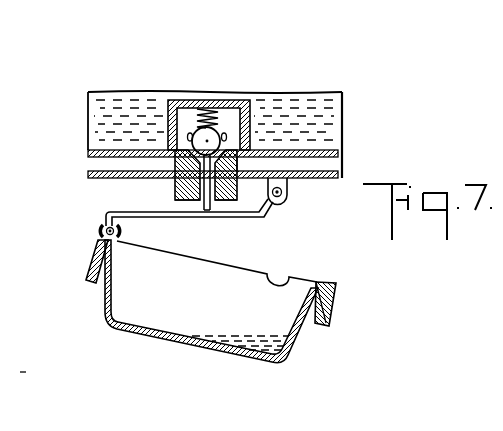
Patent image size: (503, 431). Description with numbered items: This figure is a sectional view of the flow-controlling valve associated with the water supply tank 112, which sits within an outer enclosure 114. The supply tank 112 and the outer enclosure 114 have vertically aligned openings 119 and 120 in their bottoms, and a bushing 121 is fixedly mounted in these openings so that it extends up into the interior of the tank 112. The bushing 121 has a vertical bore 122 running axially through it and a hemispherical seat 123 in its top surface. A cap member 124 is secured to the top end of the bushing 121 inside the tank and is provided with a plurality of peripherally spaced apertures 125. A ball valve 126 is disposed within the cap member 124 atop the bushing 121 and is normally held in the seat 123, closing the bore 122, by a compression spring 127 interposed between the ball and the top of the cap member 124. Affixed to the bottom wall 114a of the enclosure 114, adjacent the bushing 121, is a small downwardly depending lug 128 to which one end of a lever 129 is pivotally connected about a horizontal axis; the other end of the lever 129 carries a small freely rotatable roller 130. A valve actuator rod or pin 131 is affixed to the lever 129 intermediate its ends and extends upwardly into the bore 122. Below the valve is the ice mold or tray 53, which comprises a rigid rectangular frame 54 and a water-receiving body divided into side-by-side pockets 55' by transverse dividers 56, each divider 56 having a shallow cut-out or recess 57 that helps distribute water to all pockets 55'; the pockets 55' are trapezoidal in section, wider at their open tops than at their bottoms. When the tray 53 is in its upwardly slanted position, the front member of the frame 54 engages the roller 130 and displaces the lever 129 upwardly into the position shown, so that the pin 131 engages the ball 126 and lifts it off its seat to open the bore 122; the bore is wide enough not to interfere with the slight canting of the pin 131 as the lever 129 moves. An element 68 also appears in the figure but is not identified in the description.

The water supply tank 112 is at (328, 148).
The outer enclosure 114 is at (330, 183).
The bottom wall of the outer enclosure 114a is at (88, 176).
The opening in the tank bottom 119 is at (187, 146).
The opening in the enclosure bottom 120 is at (250, 160).
The bushing 121 is at (178, 188).
The vertical bore 122 is at (182, 198).
The hemispherical seat 123 is at (238, 191).
The cap member 124 is at (218, 100).
The apertures 125 is at (186, 134).
The ball valve 126 is at (228, 133).
The compression spring 127 is at (196, 100).
The lug 128 is at (283, 191).
The lever 129 is at (190, 244).
The roller 130 is at (102, 231).
The valve actuator rod or pin 131 is at (216, 250).
The ice mold or tray 53 is at (231, 364).
The frame 54 is at (96, 284).
The pockets 55' is at (211, 302).
The transverse partitions or dividers 56 is at (333, 284).
The shallow cut-out or recess 57 is at (282, 281).
The assembly 68 is at (13, 375).